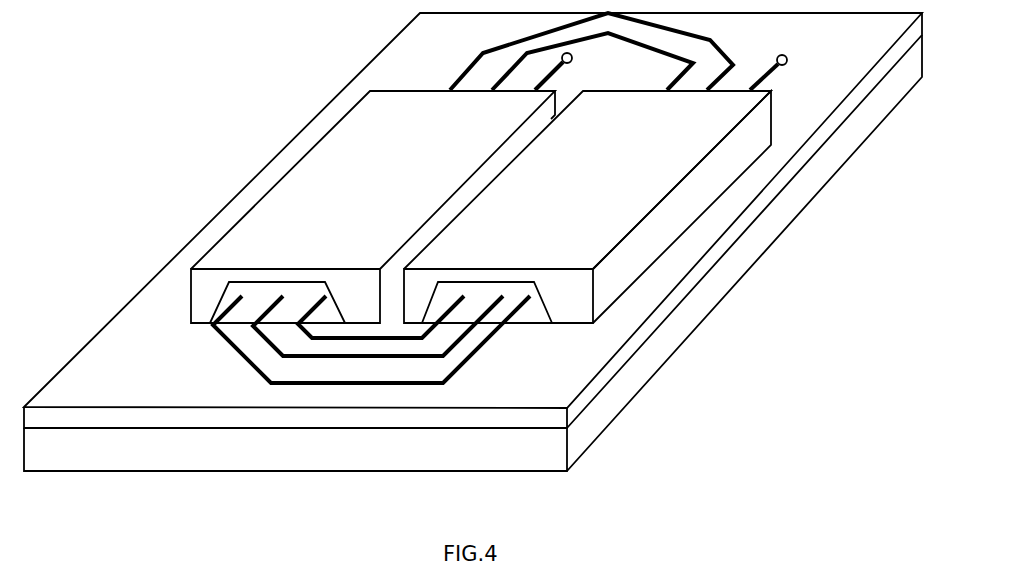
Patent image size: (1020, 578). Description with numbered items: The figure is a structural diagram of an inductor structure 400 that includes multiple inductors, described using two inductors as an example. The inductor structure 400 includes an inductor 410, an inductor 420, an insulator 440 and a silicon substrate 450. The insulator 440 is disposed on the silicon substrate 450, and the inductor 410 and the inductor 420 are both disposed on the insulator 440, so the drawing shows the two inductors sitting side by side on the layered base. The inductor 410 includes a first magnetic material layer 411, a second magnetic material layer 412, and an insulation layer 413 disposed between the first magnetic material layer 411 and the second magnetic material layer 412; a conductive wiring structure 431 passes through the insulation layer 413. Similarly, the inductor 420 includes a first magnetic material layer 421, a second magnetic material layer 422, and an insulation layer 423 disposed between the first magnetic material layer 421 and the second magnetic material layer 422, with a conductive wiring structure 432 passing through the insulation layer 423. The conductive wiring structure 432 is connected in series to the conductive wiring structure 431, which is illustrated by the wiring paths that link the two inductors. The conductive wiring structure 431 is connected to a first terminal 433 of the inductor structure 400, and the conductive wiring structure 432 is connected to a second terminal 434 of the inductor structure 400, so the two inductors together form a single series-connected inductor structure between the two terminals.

The inductor structure 400 is at (181, 60).
The inductor 410 is at (393, 90).
The first magnetic material layer 411 is at (202, 317).
The second magnetic material layer 412 is at (295, 273).
The insulation layer 413 is at (332, 310).
The inductor 420 is at (772, 118).
The first magnetic material layer 421 is at (557, 325).
The second magnetic material layer 422 is at (513, 273).
The insulation layer 423 is at (533, 307).
The conductive wiring structure 431 is at (228, 347).
The conductive wiring structure 432 is at (487, 345).
The first terminal 433 is at (573, 60).
The second terminal 434 is at (787, 61).
The insulator 440 is at (558, 427).
The silicon substrate 450 is at (558, 469).